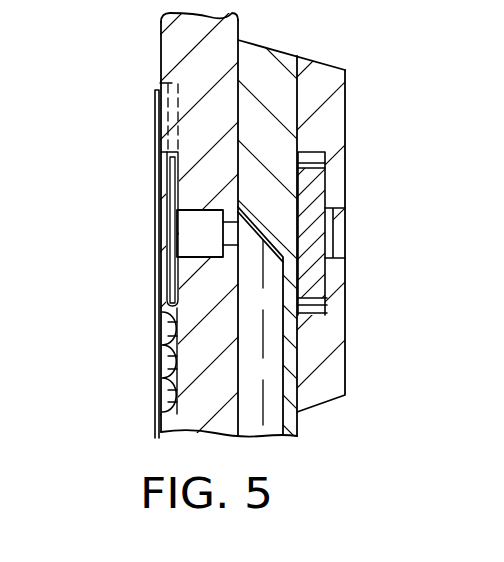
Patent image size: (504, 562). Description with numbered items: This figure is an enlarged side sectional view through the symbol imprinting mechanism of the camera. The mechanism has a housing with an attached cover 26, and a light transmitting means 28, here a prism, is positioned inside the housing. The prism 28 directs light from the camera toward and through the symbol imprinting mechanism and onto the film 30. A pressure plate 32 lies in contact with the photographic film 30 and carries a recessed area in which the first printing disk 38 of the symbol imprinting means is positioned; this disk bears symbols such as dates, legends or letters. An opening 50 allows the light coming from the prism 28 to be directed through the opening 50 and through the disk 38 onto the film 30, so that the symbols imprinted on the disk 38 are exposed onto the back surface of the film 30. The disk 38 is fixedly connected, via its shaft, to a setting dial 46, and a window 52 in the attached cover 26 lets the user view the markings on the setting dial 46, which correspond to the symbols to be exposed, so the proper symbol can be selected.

The cover 26 is at (349, 64).
The light transmitting means 28 is at (273, 398).
The film 30 is at (151, 120).
The pressure plate 32 is at (160, 394).
The first printing disk 38 is at (177, 211).
The setting dial 46 is at (312, 172).
The opening 50 is at (228, 239).
The window 52 is at (337, 258).